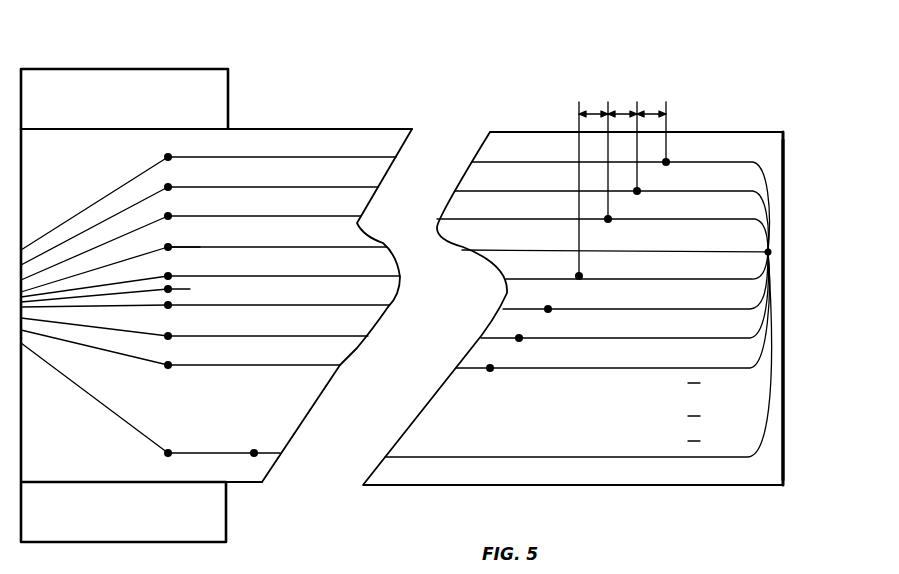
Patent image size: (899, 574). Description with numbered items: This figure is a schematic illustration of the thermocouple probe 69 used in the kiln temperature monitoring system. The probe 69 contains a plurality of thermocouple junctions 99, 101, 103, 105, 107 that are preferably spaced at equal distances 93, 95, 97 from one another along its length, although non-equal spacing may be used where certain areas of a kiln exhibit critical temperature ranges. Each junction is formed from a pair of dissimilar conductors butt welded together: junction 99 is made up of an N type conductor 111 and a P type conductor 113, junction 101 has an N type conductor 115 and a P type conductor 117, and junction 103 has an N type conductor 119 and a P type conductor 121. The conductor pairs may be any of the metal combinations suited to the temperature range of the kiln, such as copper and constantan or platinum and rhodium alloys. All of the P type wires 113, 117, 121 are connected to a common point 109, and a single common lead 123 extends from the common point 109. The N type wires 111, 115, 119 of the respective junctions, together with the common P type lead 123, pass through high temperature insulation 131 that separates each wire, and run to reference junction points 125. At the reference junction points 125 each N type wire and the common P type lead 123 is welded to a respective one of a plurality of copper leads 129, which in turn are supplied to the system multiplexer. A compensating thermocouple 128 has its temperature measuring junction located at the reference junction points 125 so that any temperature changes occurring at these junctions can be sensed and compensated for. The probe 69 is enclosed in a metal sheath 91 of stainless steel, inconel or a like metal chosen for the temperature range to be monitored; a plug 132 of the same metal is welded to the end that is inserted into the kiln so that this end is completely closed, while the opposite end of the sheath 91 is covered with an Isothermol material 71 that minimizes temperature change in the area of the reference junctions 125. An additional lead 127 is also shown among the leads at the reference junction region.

The thermocouple probe 69 is at (727, 130).
The Isothermol material 71 is at (157, 69).
The metal sheath 91 is at (352, 129).
The spacing distance 93 is at (652, 104).
The spacing distance 95 is at (622, 104).
The spacing distance 97 is at (596, 104).
The thermocouple junction 99 is at (669, 164).
The thermocouple junction 101 is at (639, 193).
The thermocouple junction 103 is at (610, 221).
The thermocouple junction 105 is at (583, 276).
The thermocouple junction 107 is at (551, 311).
The common point 109 is at (772, 252).
The N type conductor 111 is at (552, 163).
The P type conductor 113 is at (739, 150).
The N type conductor 115 is at (548, 192).
The P type conductor 117 is at (702, 193).
The N type conductor 119 is at (545, 222).
The P type conductor 121 is at (703, 222).
The common lead 123 is at (690, 253).
The reference junction points 125 is at (165, 157).
The lead conductor 127 is at (172, 247).
The compensating thermocouple 128 is at (172, 289).
The copper leads 129 is at (67, 250).
The high temperature insulation 131 is at (270, 208).
The plug 132 is at (785, 206).